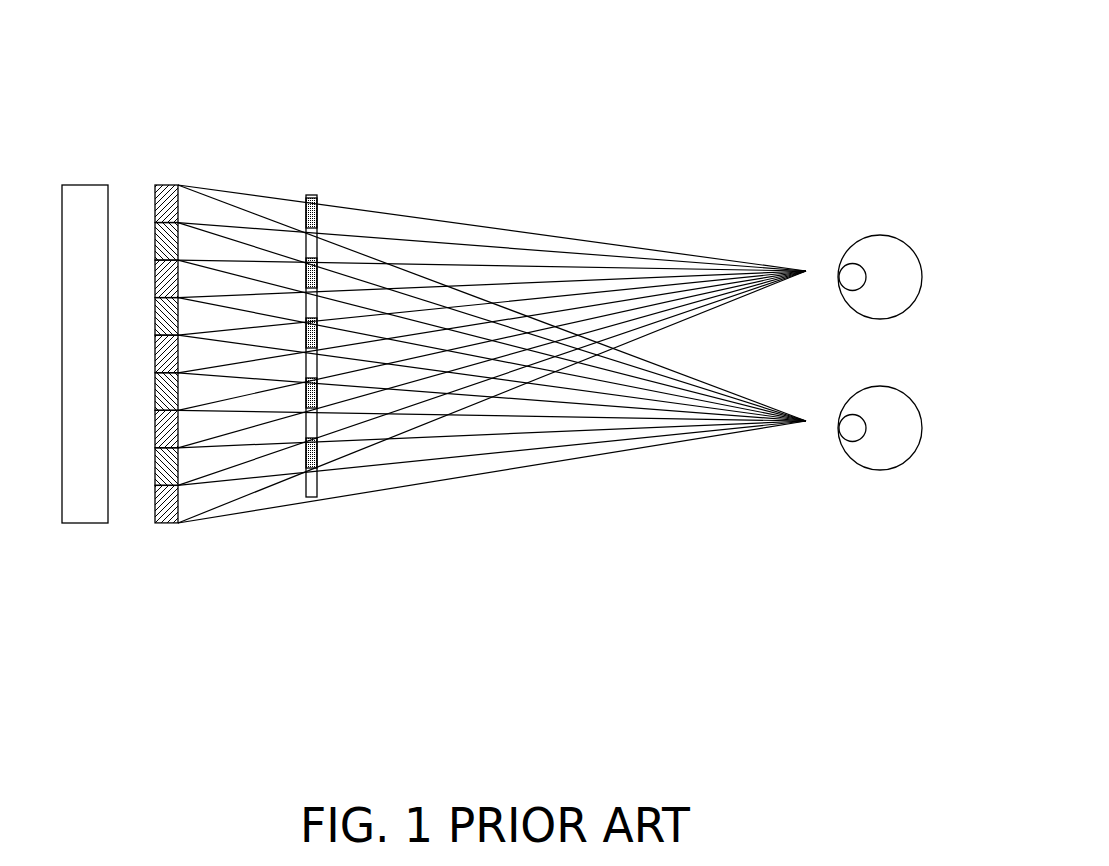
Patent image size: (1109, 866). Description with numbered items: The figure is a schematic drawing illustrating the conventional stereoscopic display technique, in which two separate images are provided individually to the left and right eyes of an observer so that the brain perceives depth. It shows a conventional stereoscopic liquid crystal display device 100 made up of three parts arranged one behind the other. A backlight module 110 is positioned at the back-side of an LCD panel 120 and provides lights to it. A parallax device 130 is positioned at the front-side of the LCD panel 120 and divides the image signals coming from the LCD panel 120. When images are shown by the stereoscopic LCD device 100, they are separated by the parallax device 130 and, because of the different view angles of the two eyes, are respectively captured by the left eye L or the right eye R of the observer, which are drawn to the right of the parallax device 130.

The stereoscopic display system (prior art) 100 is at (742, 110).
The backlight module 110 is at (85, 523).
The display panel with pixel columns 120 is at (164, 523).
The parallax barrier 130 is at (312, 497).